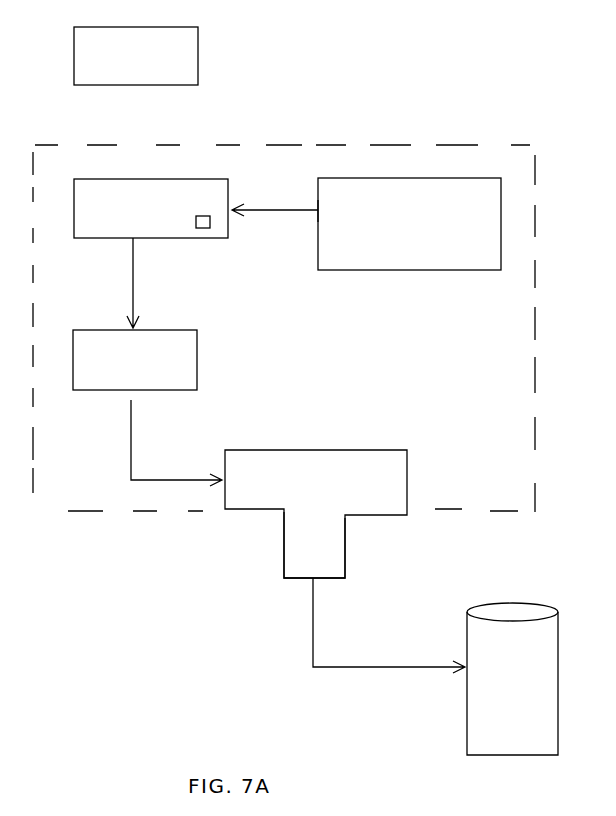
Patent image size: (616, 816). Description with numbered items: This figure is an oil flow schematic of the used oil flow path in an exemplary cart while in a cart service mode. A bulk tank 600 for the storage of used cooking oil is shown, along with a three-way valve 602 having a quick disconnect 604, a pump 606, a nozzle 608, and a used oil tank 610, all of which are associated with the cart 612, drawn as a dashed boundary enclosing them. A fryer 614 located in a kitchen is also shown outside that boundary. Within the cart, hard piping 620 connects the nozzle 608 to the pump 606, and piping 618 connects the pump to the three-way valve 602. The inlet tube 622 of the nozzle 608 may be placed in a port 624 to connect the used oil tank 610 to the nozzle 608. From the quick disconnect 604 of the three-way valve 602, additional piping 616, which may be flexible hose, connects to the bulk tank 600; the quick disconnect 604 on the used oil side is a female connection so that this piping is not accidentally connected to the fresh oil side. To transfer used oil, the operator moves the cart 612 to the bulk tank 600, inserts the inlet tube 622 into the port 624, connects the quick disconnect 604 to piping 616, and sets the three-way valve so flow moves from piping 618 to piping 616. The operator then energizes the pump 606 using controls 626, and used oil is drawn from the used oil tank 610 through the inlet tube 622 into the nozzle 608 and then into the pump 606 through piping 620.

The bulk tank 600 is at (548, 676).
The three-way valve 602 is at (348, 458).
The quick disconnect 604 is at (345, 565).
The pump 606 is at (197, 336).
The nozzle 608 is at (177, 182).
The used oil tank 610 is at (440, 262).
The cart 612 is at (393, 133).
The fryer 614 is at (198, 57).
The piping 616 is at (366, 673).
The piping 618 is at (133, 420).
The piping 620 is at (136, 292).
The inlet tube 622 is at (290, 210).
The port 624 is at (313, 215).
The controls 626 is at (207, 228).